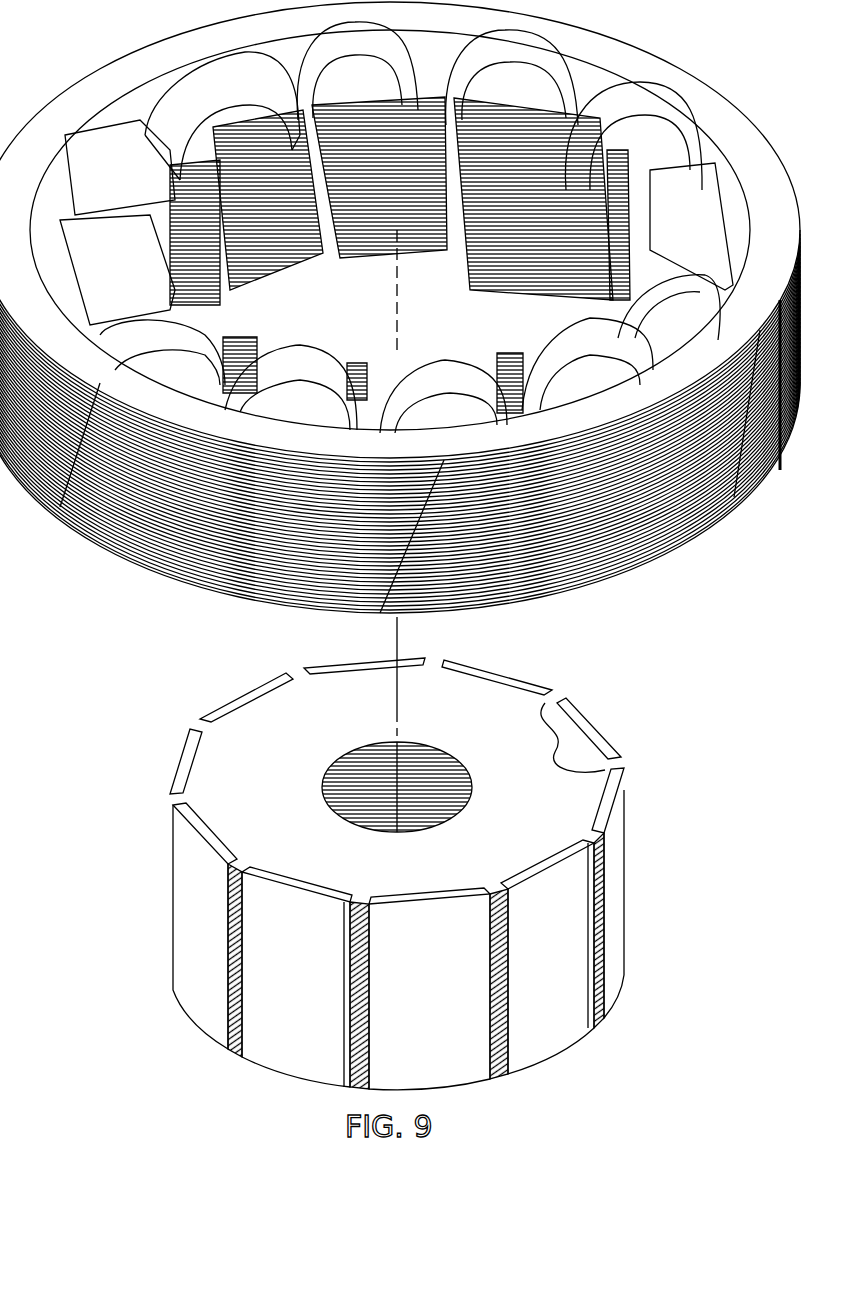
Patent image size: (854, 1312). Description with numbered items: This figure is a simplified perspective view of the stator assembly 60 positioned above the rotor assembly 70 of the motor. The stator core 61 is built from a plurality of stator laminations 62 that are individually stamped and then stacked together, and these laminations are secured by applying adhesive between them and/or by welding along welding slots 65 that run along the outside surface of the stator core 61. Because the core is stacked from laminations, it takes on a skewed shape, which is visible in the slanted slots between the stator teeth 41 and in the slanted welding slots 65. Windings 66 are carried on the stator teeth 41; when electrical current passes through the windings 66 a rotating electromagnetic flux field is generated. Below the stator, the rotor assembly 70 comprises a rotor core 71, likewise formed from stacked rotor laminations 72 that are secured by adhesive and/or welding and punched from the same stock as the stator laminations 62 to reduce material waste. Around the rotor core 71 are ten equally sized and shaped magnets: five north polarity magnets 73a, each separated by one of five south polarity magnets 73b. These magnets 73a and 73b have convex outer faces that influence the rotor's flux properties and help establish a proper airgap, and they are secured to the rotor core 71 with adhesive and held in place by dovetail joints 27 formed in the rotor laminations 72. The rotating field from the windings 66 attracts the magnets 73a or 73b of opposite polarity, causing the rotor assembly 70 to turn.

The stator assembly 60 is at (400, 417).
The stator core 61 is at (108, 94).
The stator laminations 62 is at (192, 538).
The welding slots 65 is at (55, 490).
The stator teeth 41 is at (240, 120).
The windings 66 is at (635, 98).
The rotor assembly 70 is at (329, 880).
The rotor core 71 is at (277, 786).
The rotor laminations 72 is at (493, 1010).
The north polarity magnets 73a is at (225, 945).
The south polarity magnets 73b is at (322, 997).
The dovetail joints 27 is at (548, 744).